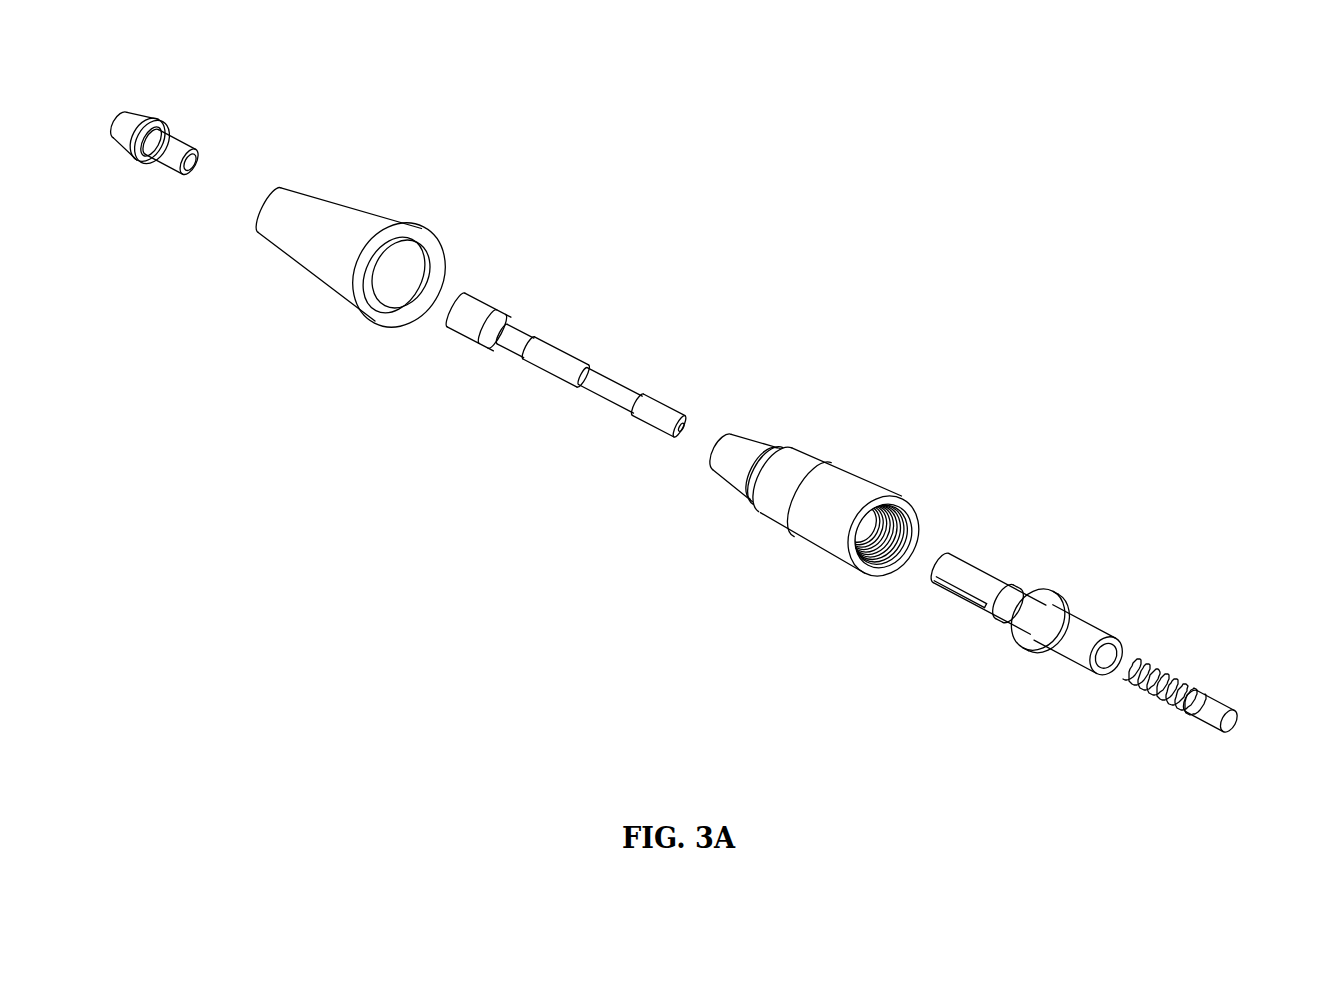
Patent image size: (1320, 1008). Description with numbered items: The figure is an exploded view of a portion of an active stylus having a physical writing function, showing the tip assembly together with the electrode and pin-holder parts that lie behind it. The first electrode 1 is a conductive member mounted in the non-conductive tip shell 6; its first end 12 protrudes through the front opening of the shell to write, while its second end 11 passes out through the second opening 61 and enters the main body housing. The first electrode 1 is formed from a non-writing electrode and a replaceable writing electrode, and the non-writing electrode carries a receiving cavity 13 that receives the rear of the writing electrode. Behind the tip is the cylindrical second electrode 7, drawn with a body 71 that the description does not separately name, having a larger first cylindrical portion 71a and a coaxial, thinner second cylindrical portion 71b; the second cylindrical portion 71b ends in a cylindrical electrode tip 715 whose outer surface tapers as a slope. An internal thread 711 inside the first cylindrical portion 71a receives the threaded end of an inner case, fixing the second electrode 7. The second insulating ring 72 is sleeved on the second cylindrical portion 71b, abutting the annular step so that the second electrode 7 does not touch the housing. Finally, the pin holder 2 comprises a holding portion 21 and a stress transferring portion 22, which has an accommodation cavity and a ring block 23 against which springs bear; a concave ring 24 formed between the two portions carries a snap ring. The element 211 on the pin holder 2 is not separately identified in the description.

The first electrode 1 is at (615, 587).
The second end 11 is at (657, 426).
The first end 12 is at (123, 145).
The receiving cavity 13 is at (462, 323).
The tip shell 6 is at (347, 230).
The second opening 61 is at (398, 273).
The second electrode 7 is at (703, 745).
The connector housing 71 is at (800, 700).
The first cylindrical portion 71a is at (833, 528).
The second cylindrical portion 71b is at (740, 500).
The internal thread 711 is at (880, 553).
The cylindrical electrode tip 715 is at (755, 436).
The second insulating ring 72 is at (828, 448).
The pin holder 2 is at (1143, 428).
The holding portion 21 is at (985, 562).
The spring and pin 211 is at (1222, 698).
The stress transferring portion 22 is at (1093, 625).
The ring block 23 is at (1028, 620).
The concave ring 24 is at (984, 618).